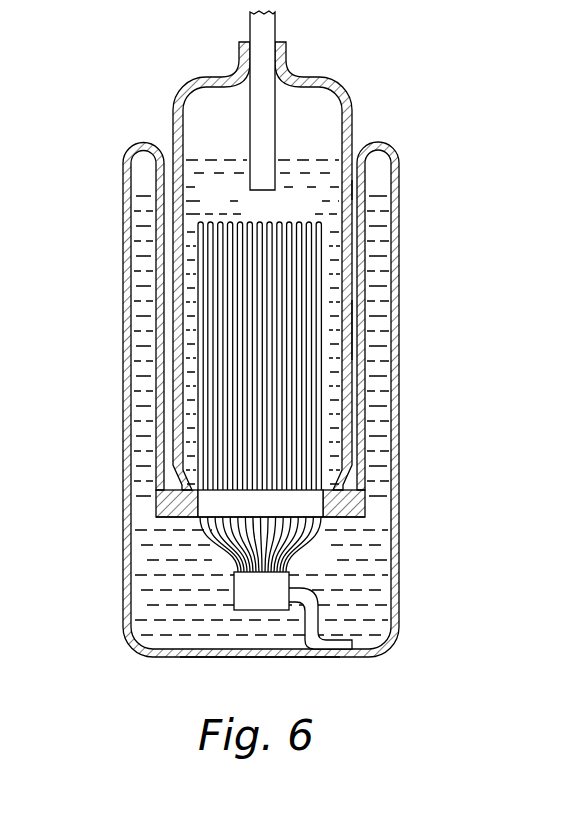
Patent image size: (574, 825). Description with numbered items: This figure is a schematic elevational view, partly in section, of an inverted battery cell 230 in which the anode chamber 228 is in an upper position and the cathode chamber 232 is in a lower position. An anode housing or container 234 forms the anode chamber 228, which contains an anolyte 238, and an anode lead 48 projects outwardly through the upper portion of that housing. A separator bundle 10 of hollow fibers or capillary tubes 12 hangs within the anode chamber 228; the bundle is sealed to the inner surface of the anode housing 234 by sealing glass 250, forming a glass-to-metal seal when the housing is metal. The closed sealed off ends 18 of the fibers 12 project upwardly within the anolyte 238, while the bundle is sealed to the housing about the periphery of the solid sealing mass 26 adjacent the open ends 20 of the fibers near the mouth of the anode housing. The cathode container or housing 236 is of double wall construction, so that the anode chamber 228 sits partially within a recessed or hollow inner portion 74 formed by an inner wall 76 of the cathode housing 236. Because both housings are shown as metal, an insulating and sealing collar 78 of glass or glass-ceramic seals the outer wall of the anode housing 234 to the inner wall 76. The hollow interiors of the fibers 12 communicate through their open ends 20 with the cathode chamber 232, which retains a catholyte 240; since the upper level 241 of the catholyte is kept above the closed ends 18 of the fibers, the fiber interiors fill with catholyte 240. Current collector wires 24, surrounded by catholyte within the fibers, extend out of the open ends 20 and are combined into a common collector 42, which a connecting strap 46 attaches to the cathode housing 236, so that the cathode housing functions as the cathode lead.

The separator bundle 10 is at (310, 250).
The hollow fibers or capillary tubes 12 is at (315, 337).
The closed or sealed off end 18 is at (312, 223).
The open end 20 is at (206, 518).
The current collector wires 24 is at (302, 545).
The solid sealing mass 26 is at (325, 520).
The common collector 42 is at (234, 595).
The connecting strap 46 is at (312, 612).
The anode lead 48 is at (268, 27).
The recessed or hollow inner portion 74 is at (352, 190).
The inner wall 76 is at (360, 413).
The insulating and sealing collar 78 is at (352, 501).
The anode chamber 228 is at (323, 110).
The battery cell 230 is at (268, 399).
The cathode chamber 232 is at (381, 572).
The anode housing or container 234 is at (345, 328).
The cathode container or housing 236 is at (399, 257).
The anolyte 238 is at (238, 207).
The catholyte 240 is at (140, 568).
The upper level 241 is at (140, 192).
The sealing glass 250 is at (313, 509).